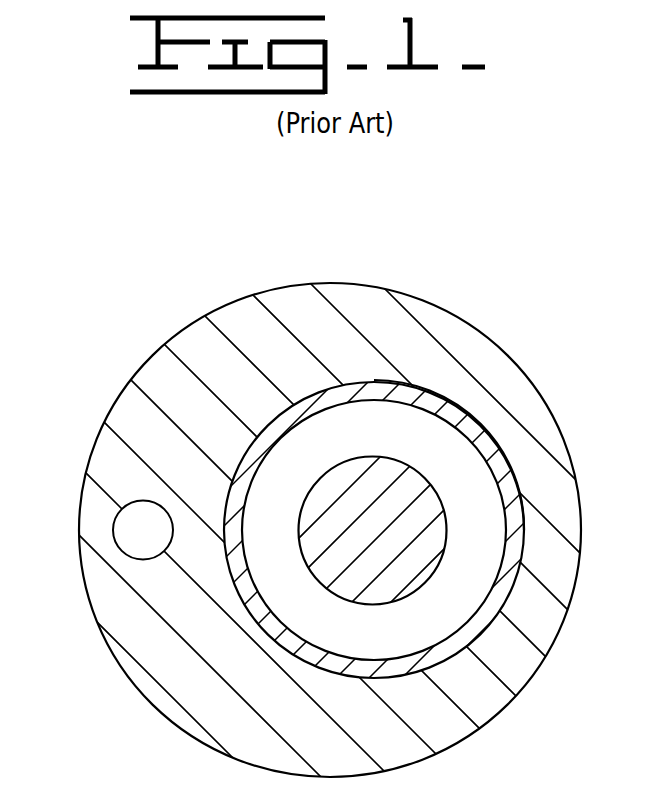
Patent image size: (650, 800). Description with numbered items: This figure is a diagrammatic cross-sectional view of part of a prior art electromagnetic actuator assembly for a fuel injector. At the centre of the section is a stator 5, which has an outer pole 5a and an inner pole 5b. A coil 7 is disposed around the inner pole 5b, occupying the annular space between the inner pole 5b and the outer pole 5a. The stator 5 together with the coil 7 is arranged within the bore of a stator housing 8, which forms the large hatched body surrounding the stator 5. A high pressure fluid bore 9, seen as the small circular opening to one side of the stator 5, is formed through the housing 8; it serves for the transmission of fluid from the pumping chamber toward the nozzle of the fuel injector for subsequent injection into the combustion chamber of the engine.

The stator 5 is at (508, 453).
The outer pole 5a is at (453, 403).
The inner pole 5b is at (428, 547).
The coil 7 is at (432, 622).
The stator housing 8 is at (182, 683).
The high pressure fluid bore 9 is at (117, 530).